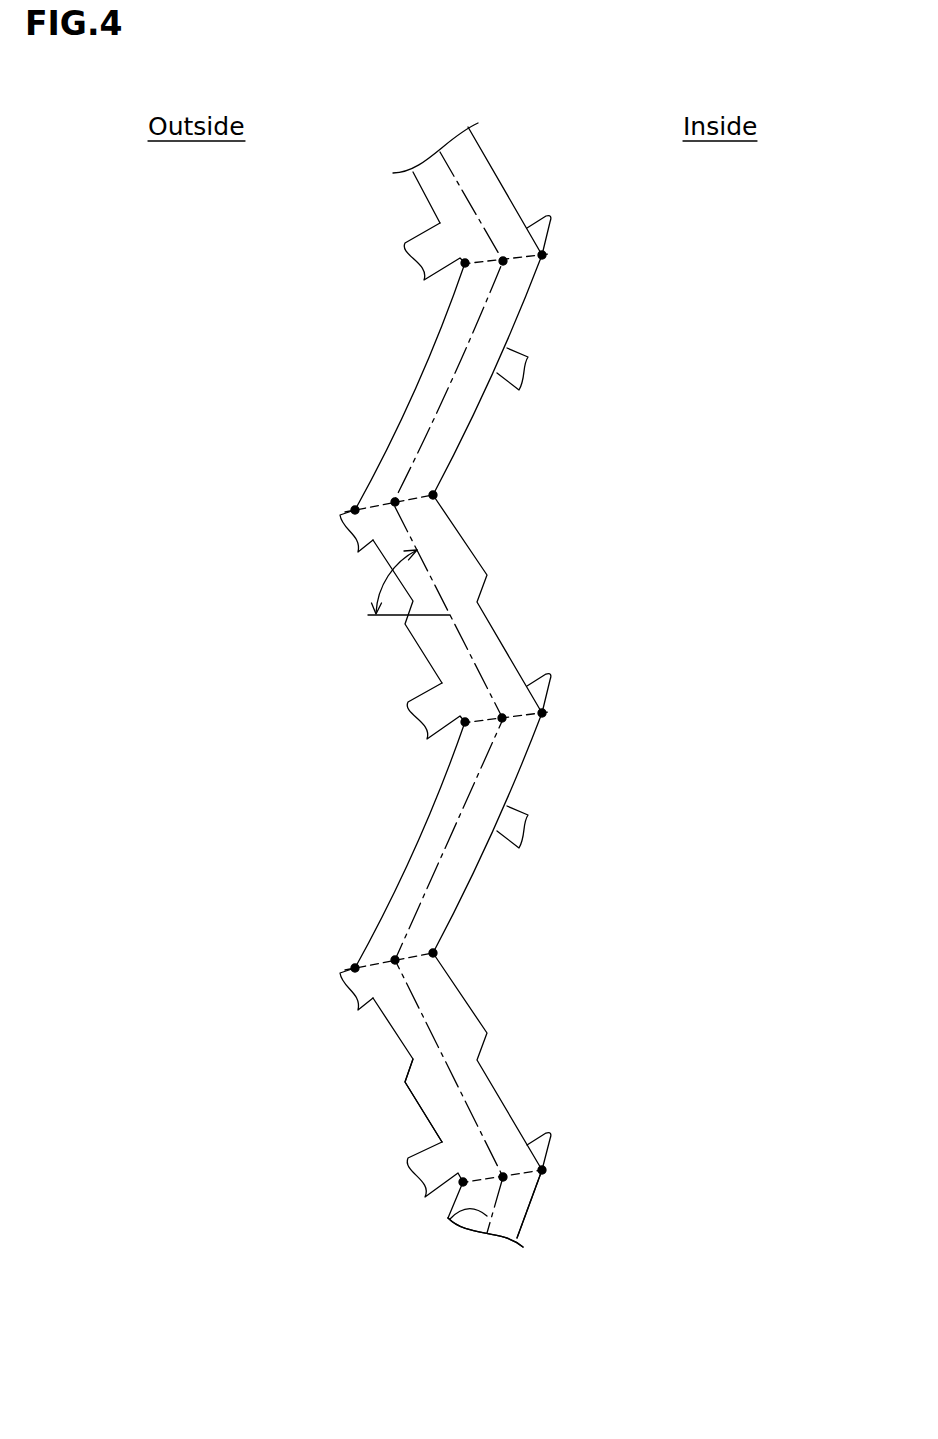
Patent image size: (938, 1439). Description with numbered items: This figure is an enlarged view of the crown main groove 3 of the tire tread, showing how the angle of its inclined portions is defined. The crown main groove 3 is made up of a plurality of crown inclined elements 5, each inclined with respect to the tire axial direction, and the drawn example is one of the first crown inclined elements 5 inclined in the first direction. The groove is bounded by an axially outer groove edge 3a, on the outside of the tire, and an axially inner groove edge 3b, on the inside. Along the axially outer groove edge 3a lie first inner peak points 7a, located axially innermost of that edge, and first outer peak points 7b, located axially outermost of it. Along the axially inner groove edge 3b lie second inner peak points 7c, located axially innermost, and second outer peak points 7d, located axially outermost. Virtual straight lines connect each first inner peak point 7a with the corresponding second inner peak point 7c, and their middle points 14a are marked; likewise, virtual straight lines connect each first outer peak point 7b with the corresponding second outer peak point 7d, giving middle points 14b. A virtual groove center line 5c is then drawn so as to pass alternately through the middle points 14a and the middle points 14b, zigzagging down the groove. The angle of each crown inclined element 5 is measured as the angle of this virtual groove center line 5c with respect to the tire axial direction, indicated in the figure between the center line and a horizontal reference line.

The crown main groove 3 is at (470, 170).
The axially outer groove edge 3a is at (436, 1122).
The axially inner groove edge 3b is at (525, 1211).
The crown inclined element 5 is at (483, 357).
The virtual groove center line 5c is at (440, 1210).
The first inner peak point 7a is at (463, 265).
The first outer peak point 7b is at (355, 510).
The second inner peak point 7c is at (542, 255).
The second outer peak point 7d is at (433, 495).
The middle point 14a is at (503, 258).
The middle point 14b is at (395, 502).